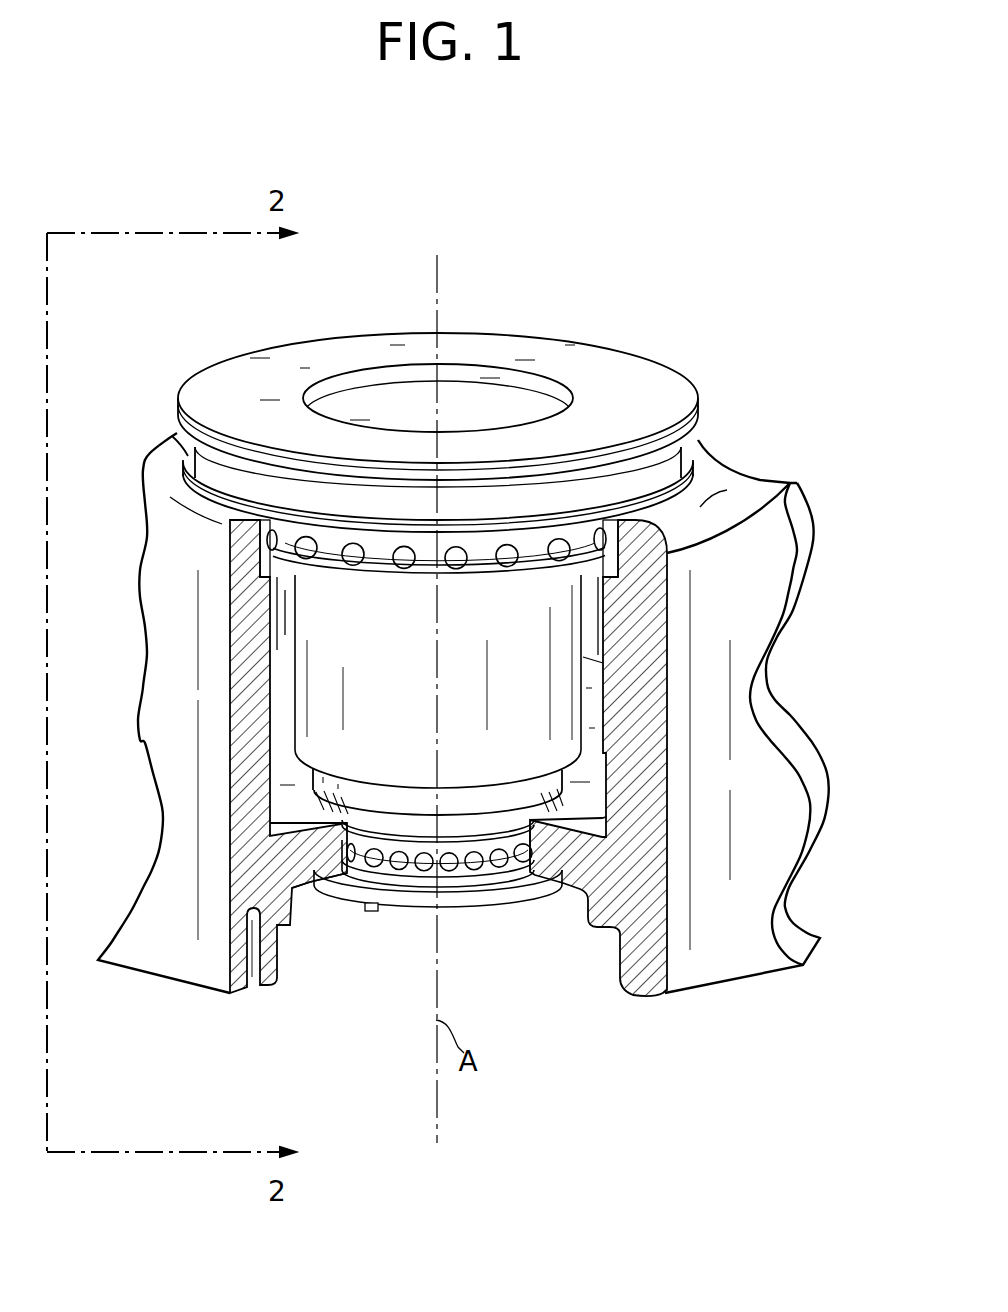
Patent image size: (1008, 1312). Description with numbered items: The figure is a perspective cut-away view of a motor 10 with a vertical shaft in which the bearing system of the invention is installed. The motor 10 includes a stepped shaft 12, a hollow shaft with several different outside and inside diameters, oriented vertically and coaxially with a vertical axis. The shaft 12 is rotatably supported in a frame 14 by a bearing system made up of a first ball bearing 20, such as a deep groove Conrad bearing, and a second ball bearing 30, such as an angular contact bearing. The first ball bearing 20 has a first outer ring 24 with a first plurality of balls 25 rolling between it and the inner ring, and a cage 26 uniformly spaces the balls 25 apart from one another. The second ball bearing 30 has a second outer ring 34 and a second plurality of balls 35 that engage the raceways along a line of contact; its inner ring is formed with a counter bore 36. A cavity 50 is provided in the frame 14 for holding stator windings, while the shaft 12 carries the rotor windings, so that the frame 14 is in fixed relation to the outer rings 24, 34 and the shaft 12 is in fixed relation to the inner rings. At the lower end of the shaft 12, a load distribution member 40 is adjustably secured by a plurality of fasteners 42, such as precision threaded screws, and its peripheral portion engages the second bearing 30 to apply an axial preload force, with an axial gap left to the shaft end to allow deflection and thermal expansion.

The motor 10 is at (726, 284).
The stepped shaft 12 is at (623, 387).
The frame 14 is at (176, 605).
The first ball bearing 20 is at (545, 583).
The first outer ring 24 is at (612, 550).
The first plurality of balls 25 is at (353, 548).
The cage 26 is at (428, 550).
The second ball bearing 30 is at (495, 893).
The second outer ring 34 is at (307, 880).
The second plurality of balls 35 is at (395, 868).
The counter bore 36 is at (412, 875).
The load distribution member 40 is at (538, 888).
The fasteners 42 is at (373, 910).
The cavity 50 is at (278, 606).